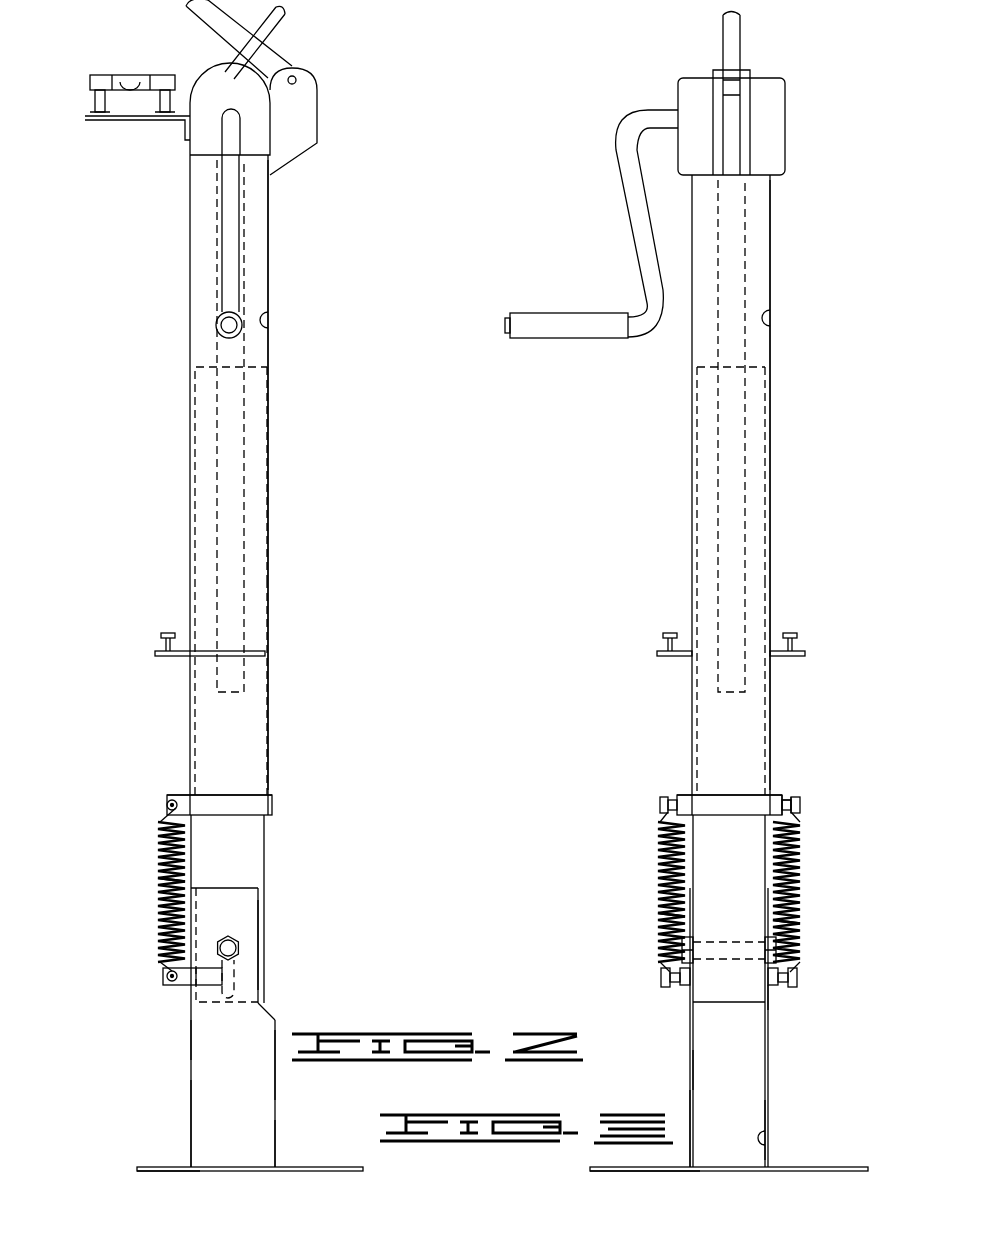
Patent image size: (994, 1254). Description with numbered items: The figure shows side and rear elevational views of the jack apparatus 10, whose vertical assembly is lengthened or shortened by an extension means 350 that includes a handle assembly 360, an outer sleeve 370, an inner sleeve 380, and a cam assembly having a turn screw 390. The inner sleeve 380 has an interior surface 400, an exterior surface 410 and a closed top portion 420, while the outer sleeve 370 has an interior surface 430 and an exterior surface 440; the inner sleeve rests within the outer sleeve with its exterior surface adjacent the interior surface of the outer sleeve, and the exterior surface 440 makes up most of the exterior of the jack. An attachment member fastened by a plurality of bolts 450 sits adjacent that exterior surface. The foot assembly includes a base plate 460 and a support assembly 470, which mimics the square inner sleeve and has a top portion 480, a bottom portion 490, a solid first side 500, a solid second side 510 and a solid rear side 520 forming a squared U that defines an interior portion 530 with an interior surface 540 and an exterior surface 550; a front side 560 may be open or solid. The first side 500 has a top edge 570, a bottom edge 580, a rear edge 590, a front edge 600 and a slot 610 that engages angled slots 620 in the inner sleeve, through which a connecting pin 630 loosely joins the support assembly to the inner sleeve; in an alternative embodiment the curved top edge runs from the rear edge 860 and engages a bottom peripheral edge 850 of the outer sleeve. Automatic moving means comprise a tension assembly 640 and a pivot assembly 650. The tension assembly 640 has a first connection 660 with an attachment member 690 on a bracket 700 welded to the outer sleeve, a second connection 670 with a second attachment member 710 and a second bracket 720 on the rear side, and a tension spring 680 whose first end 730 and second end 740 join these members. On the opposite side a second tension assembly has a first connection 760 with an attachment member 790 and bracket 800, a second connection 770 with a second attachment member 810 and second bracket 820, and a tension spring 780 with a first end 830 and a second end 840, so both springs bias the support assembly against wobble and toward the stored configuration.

In FIG. 2, the jack apparatus 10 is at (148, 44).
In FIG. 3, the jack apparatus 10 is at (660, 70).
In FIG. 2, the extension means 350 is at (290, 212).
In FIG. 3, the extension means 350 is at (785, 205).
In FIG. 2, the handle assembly 360 is at (230, 190).
In FIG. 3, the handle assembly 360 is at (635, 207).
In FIG. 2, the outer sleeve 370 is at (270, 283).
In FIG. 3, the outer sleeve 370 is at (770, 262).
In FIG. 2, the inner sleeve 380 is at (268, 418).
In FIG. 3, the inner sleeve 380 is at (765, 447).
In FIG. 2, the turn screw 390 is at (220, 447).
In FIG. 3, the turn screw 390 is at (720, 520).
In FIG. 2, the interior surface 400 is at (268, 545).
In FIG. 3, the interior surface 400 is at (765, 575).
In FIG. 2, the exterior surface 410 is at (268, 483).
In FIG. 3, the exterior surface 410 is at (765, 537).
In FIG. 2, the closed top portion 420 is at (212, 360).
In FIG. 3, the closed top portion 420 is at (765, 357).
In FIG. 2, the interior surface 430 is at (265, 320).
In FIG. 3, the interior surface 430 is at (770, 318).
In FIG. 2, the exterior surface 440 is at (190, 258).
In FIG. 3, the exterior surface 440 is at (692, 385).
In FIG. 2, the bolts 450 is at (168, 630).
In FIG. 3, the bolts 450 is at (670, 630).
In FIG. 2, the base plate 460 is at (155, 655).
In FIG. 3, the base plate 460 is at (657, 655).
In FIG. 2, the support assembly 470 is at (170, 1053).
In FIG. 2, the top portion 480 is at (285, 885).
In FIG. 2, the bottom portion 490 is at (290, 1118).
In FIG. 2, the solid first side 500 is at (215, 1118).
In FIG. 3, the solid first side 500 is at (720, 1070).
In FIG. 3, the solid second side 510 is at (770, 1085).
In FIG. 2, the solid rear side 520 is at (190, 1095).
In FIG. 3, the solid rear side 520 is at (725, 1045).
In FIG. 3, the interior portion 530 is at (738, 1122).
In FIG. 3, the interior surface 540 is at (772, 1138).
In FIG. 2, the exterior surface 550 is at (262, 1020).
In FIG. 3, the exterior surface 550 is at (770, 1045).
In FIG. 2, the front side 560 is at (275, 1075).
In FIG. 3, the front side 560 is at (712, 1165).
In FIG. 2, the top edge 570 is at (232, 888).
In FIG. 3, the top edge 570 is at (770, 888).
In FIG. 2, the bottom edge 580 is at (275, 1170).
In FIG. 3, the bottom edge 580 is at (760, 1168).
In FIG. 2, the rear edge 590 is at (190, 1035).
In FIG. 3, the rear edge 590 is at (690, 1095).
In FIG. 2, the front edge 600 is at (275, 1150).
In FIG. 2, the slot 610 is at (242, 947).
In FIG. 2, the angled slots 620 is at (262, 975).
In FIG. 2, the connecting pin 630 is at (225, 942).
In FIG. 2, the tension assembly 640 is at (158, 850).
In FIG. 3, the tension assembly 640 is at (658, 855).
In FIG. 2, the pivot assembly 650 is at (250, 918).
In FIG. 2, the first connection 660 is at (167, 805).
In FIG. 3, the first connection 660 is at (672, 800).
In FIG. 2, the second connection 670 is at (170, 976).
In FIG. 3, the second connection 670 is at (660, 975).
In FIG. 2, the tension spring 680 is at (165, 882).
In FIG. 3, the tension spring 680 is at (668, 920).
In FIG. 2, the attachment member 690 is at (175, 803).
In FIG. 3, the attachment member 690 is at (668, 807).
In FIG. 2, the bracket 700 is at (185, 797).
In FIG. 3, the bracket 700 is at (690, 797).
In FIG. 2, the second attachment member 710 is at (163, 985).
In FIG. 2, the second bracket 720 is at (195, 990).
In FIG. 2, the first end 730 is at (168, 828).
In FIG. 2, the second end 740 is at (180, 955).
In FIG. 3, the first connection 760 is at (800, 805).
In FIG. 3, the second connection 770 is at (790, 982).
In FIG. 3, the tension spring 780 is at (790, 922).
In FIG. 3, the attachment member 790 is at (800, 805).
In FIG. 3, the bracket 800 is at (790, 795).
In FIG. 3, the second attachment member 810 is at (785, 995).
In FIG. 3, the second bracket 820 is at (800, 975).
In FIG. 3, the first end 830 is at (795, 815).
In FIG. 3, the second end 840 is at (776, 948).
In FIG. 2, the bottom peripheral edge 850 is at (190, 1147).
In FIG. 2, the rear edge 860 is at (185, 1170).